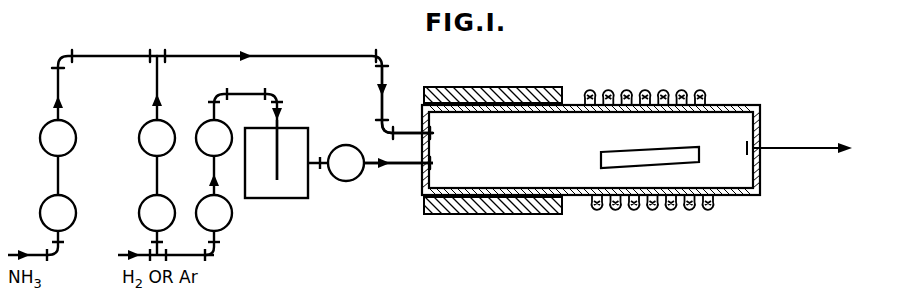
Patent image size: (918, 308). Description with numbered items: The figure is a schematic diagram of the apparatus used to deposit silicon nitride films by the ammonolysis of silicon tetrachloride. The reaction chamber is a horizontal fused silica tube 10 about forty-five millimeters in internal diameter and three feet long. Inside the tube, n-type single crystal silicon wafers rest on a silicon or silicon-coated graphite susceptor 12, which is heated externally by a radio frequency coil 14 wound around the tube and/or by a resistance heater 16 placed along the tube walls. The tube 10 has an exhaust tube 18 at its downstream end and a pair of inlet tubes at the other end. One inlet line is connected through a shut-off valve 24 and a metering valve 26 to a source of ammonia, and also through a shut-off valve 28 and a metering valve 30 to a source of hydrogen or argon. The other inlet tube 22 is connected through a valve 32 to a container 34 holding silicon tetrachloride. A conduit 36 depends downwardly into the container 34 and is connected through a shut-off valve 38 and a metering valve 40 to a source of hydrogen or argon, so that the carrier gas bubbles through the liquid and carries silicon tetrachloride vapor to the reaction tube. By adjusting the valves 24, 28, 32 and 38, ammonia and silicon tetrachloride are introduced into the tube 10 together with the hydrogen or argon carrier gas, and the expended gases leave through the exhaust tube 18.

The fused silica tube 10 is at (737, 104).
The susceptor 12 is at (648, 150).
The radio frequency coil 14 is at (643, 90).
The resistance heater 16 is at (530, 86).
The exhaust tube 18 is at (790, 147).
The inlet tube 22 is at (378, 103).
The shut-off valve 24 is at (66, 127).
The metering valve 26 is at (72, 203).
The shut-off valve 28 is at (148, 124).
The metering valve 30 is at (145, 201).
The valve 32 is at (341, 146).
The container 34 is at (299, 199).
The conduit 36 is at (280, 123).
The shut-off valve 38 is at (203, 126).
The metering valve 40 is at (202, 201).